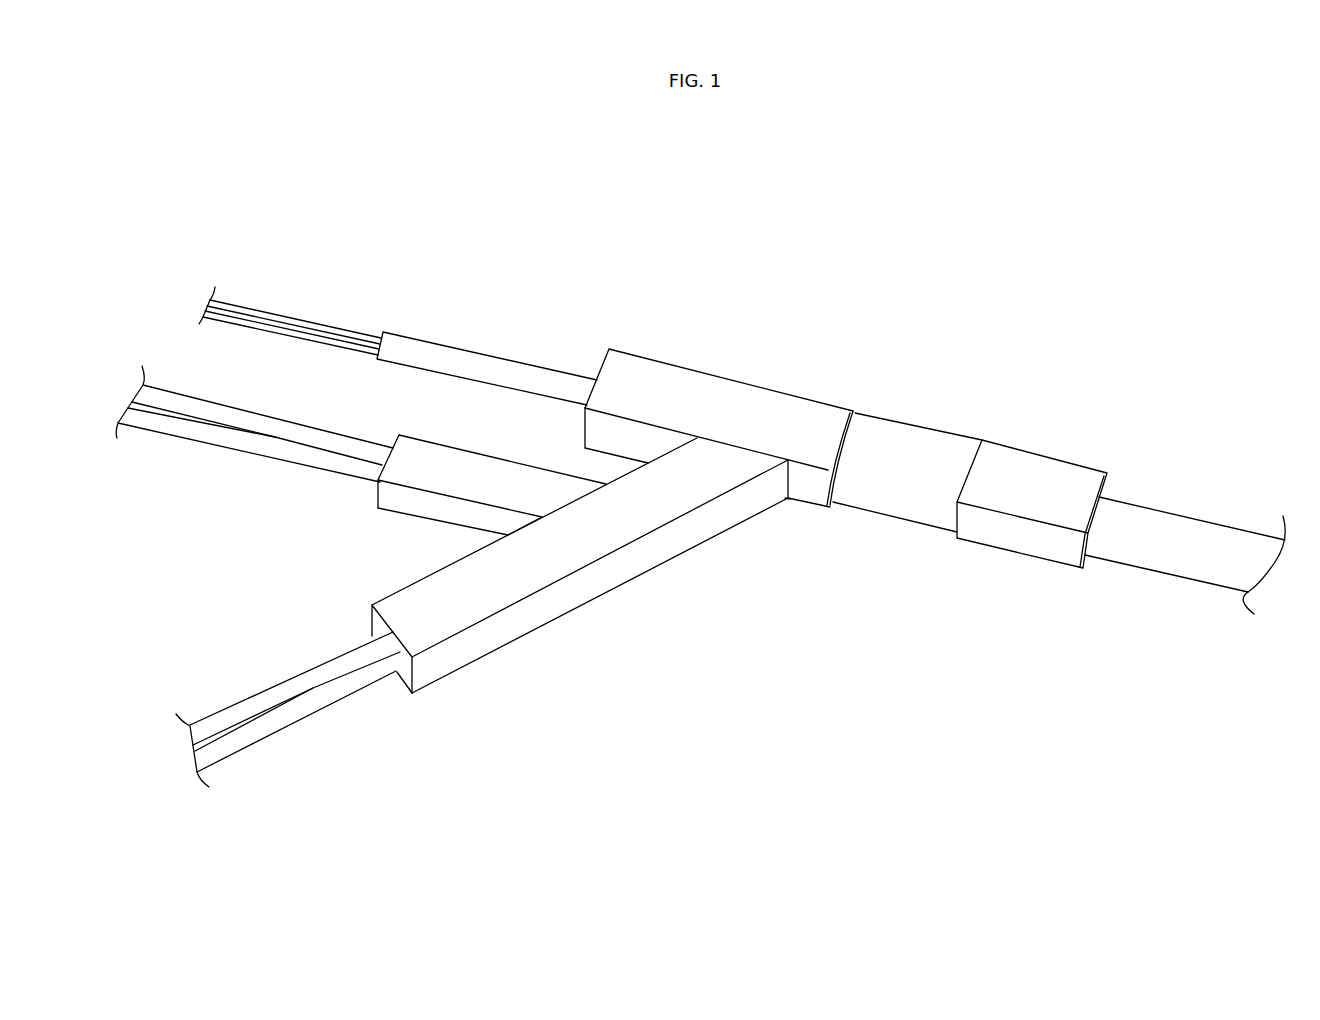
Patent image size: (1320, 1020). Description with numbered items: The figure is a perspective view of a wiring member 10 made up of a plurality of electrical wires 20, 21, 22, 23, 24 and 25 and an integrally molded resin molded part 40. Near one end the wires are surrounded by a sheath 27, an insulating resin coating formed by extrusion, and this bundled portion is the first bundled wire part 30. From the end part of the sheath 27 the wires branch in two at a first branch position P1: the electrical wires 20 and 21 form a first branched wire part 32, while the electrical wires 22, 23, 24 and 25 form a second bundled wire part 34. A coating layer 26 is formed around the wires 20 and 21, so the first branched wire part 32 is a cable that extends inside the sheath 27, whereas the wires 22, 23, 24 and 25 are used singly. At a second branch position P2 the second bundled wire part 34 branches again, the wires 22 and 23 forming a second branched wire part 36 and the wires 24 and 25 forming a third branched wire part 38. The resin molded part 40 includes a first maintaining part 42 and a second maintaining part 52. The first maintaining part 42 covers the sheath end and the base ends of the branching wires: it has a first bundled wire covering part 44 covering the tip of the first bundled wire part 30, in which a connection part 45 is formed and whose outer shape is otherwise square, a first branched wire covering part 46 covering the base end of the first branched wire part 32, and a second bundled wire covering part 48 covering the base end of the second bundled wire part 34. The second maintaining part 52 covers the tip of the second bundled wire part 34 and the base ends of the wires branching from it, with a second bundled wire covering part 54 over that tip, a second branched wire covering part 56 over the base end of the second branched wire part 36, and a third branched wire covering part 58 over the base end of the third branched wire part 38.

The wiring member 10 is at (901, 347).
The electrical wire 20 is at (262, 313).
The electrical wire 21 is at (248, 322).
The electrical wire 22 is at (238, 415).
The electrical wire 23 is at (220, 440).
The electrical wire 24 is at (240, 713).
The electrical wire 25 is at (255, 737).
The coating layer 26 is at (487, 355).
The sheath 27 is at (1170, 512).
The first bundled wire part 30 is at (1182, 546).
The first branched wire part 32 is at (501, 356).
The second bundled wire part 34 is at (617, 465).
The second branched wire part 36 is at (362, 433).
The third branched wire part 38 is at (357, 696).
The resin molded part 40 is at (700, 431).
The first maintaining part 42 is at (789, 510).
The first bundled wire covering part 44 is at (1032, 455).
The connection part 45 is at (920, 432).
The first branched wire covering part 46 is at (667, 380).
The second bundled wire covering part 48 is at (753, 492).
The second maintaining part 52 is at (566, 599).
The second bundled wire covering part 54 is at (707, 520).
The second branched wire covering part 56 is at (479, 465).
The third branched wire covering part 58 is at (498, 620).
The first branch position P1 is at (809, 382).
The second branch position P2 is at (508, 521).